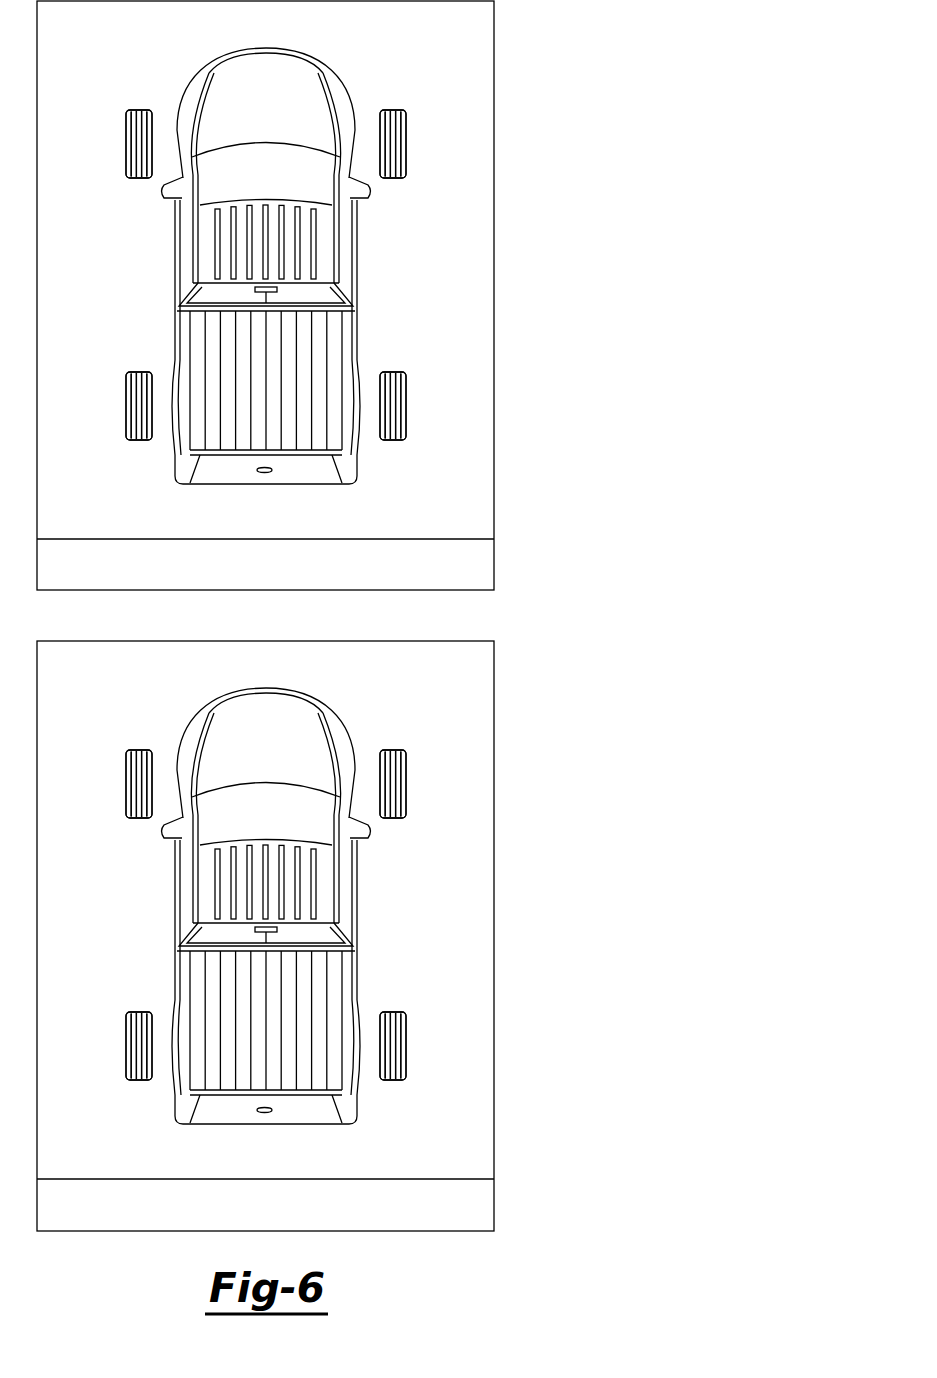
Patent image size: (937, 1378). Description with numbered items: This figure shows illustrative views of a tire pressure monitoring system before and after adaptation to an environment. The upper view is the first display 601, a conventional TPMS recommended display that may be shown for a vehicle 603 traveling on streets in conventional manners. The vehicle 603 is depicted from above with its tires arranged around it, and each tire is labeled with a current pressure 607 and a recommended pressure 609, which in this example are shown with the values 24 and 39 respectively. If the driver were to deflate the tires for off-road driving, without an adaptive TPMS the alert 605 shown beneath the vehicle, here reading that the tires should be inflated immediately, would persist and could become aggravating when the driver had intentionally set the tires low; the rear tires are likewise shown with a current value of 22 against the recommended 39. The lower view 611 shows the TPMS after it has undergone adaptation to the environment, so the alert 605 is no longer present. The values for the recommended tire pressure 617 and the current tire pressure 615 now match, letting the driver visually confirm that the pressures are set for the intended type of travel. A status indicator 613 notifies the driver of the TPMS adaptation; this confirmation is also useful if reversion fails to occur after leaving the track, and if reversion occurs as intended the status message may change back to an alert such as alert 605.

The rear tires 22 is at (264, 726).
The front tires 24 is at (234, 464).
The tire pressure sensors 39 is at (265, 595).
The first display 601 is at (467, 501).
The vehicle 603 is at (308, 55).
The alert 605 is at (467, 565).
The current pressure 607 is at (469, 132).
The recommended pressure 609 is at (474, 163).
The adapted TPMS display 611 is at (467, 1141).
The status indicator 613 is at (478, 1205).
The current tire pressure 615 is at (469, 772).
The recommended tire pressure 617 is at (474, 803).